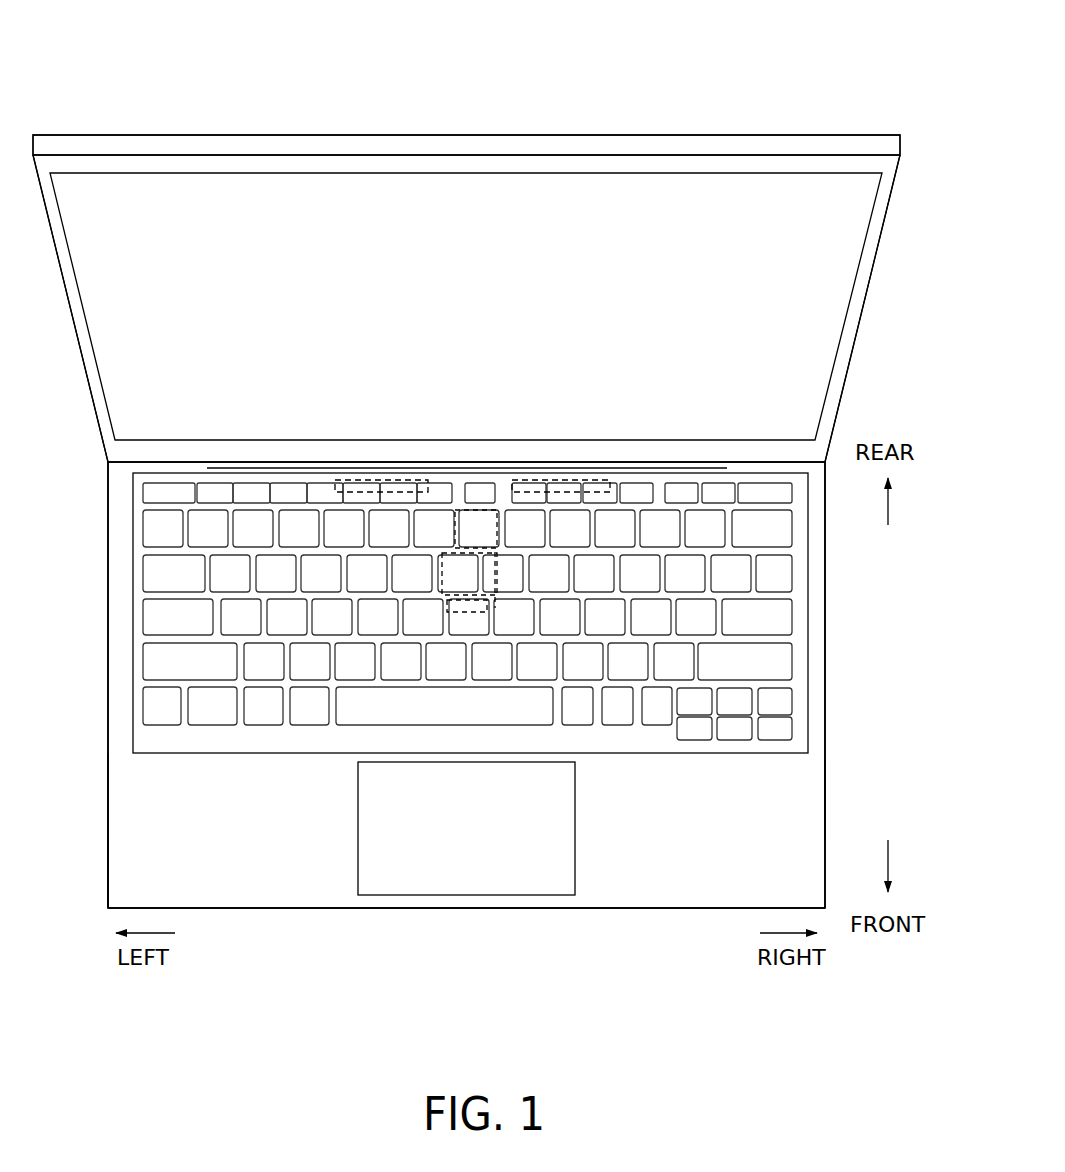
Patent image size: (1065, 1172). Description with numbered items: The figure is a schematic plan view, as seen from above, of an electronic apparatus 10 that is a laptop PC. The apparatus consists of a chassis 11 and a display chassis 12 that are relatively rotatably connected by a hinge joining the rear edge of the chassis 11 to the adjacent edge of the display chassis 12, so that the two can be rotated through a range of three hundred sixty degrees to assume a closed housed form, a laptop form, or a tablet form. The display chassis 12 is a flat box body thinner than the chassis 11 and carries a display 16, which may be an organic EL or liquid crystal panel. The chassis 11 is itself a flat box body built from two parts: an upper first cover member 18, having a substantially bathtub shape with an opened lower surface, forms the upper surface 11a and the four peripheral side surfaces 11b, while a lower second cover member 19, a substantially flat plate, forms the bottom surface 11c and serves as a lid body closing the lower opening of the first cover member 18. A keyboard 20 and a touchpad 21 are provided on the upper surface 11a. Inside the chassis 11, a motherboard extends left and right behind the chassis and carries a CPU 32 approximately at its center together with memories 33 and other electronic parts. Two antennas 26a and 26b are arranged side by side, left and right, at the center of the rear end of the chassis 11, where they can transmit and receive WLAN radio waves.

The electronic apparatus 10 is at (66, 50).
The chassis 11 is at (842, 651).
The upper surface 11a is at (130, 813).
The peripheral side surfaces 11b is at (135, 462).
The bottom surface 11c is at (145, 855).
The display chassis 12 is at (866, 303).
The display 16 is at (762, 208).
The first cover member 18 is at (797, 782).
The second cover member 19 is at (797, 818).
The keyboard 20 is at (288, 732).
The touchpad 21 is at (437, 872).
The antenna 26a is at (565, 468).
The antenna 26b is at (375, 466).
The CPU 32 is at (462, 614).
The memories (RAMs) 33 is at (505, 508).